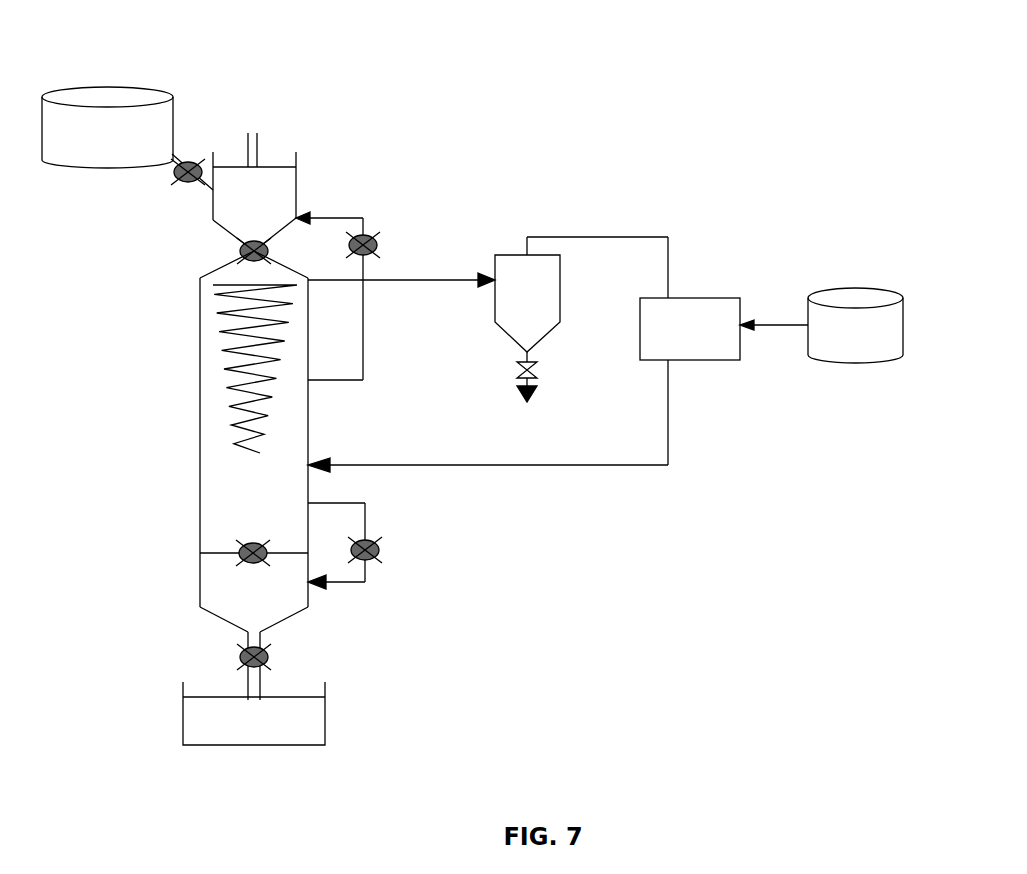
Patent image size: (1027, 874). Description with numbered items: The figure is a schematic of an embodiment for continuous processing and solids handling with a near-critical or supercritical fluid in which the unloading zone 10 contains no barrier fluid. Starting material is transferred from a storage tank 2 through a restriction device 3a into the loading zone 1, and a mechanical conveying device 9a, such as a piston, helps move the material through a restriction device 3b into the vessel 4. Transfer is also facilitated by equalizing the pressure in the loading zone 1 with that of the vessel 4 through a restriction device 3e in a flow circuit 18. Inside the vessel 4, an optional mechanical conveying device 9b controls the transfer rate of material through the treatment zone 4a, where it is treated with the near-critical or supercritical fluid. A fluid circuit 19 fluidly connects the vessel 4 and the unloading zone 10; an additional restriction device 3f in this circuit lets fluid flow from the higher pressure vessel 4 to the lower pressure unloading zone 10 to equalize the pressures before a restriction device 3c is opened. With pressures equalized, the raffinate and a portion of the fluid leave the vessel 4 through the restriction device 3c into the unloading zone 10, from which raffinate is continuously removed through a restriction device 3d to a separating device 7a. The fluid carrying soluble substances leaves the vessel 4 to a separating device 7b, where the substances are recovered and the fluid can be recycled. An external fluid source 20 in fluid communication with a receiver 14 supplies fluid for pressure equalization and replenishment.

The loading zone 1 is at (307, 182).
The storage tank 2 is at (107, 100).
The restriction device 3a is at (193, 157).
The restriction device 3b is at (233, 255).
The restriction device 3c is at (268, 560).
The restriction device 3d is at (268, 655).
The restriction device 3e is at (389, 241).
The restriction device 3f is at (393, 542).
The vessel 4 is at (188, 422).
The treatment zone 4a is at (292, 418).
The separating device 7a is at (182, 675).
The separating device 7b is at (575, 343).
The mechanical conveying device 9a is at (272, 150).
The mechanical conveying device 9b is at (215, 346).
The unloading zone 10 is at (188, 546).
The receiver 14 is at (690, 329).
The flow circuit 18 is at (363, 346).
The fluid circuit 19 is at (360, 523).
The external fluid source 20 is at (821, 325).